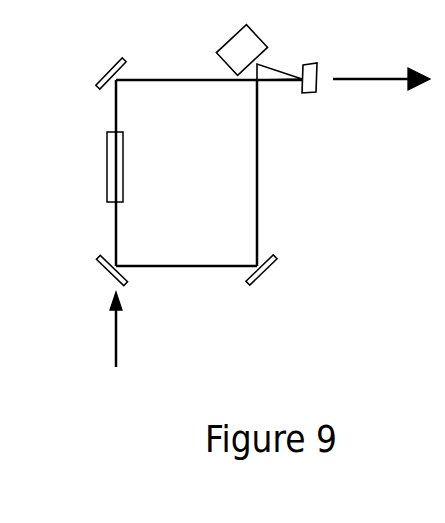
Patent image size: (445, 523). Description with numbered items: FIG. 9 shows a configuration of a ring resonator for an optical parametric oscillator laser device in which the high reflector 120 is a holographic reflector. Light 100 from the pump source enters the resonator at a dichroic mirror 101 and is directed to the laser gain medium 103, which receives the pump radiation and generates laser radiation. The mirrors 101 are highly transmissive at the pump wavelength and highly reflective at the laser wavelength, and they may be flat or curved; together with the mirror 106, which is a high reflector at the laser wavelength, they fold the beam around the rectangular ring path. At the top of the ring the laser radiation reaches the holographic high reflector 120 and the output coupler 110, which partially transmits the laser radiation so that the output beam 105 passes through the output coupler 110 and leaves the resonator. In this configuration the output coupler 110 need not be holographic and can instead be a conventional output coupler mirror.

The light 100 is at (113, 330).
The mirror 101 is at (108, 71).
The gain medium 103 is at (107, 195).
The output beam 105 is at (390, 77).
The mirror 106 is at (262, 273).
The output coupler 110 is at (311, 67).
The high reflector 120 is at (264, 45).